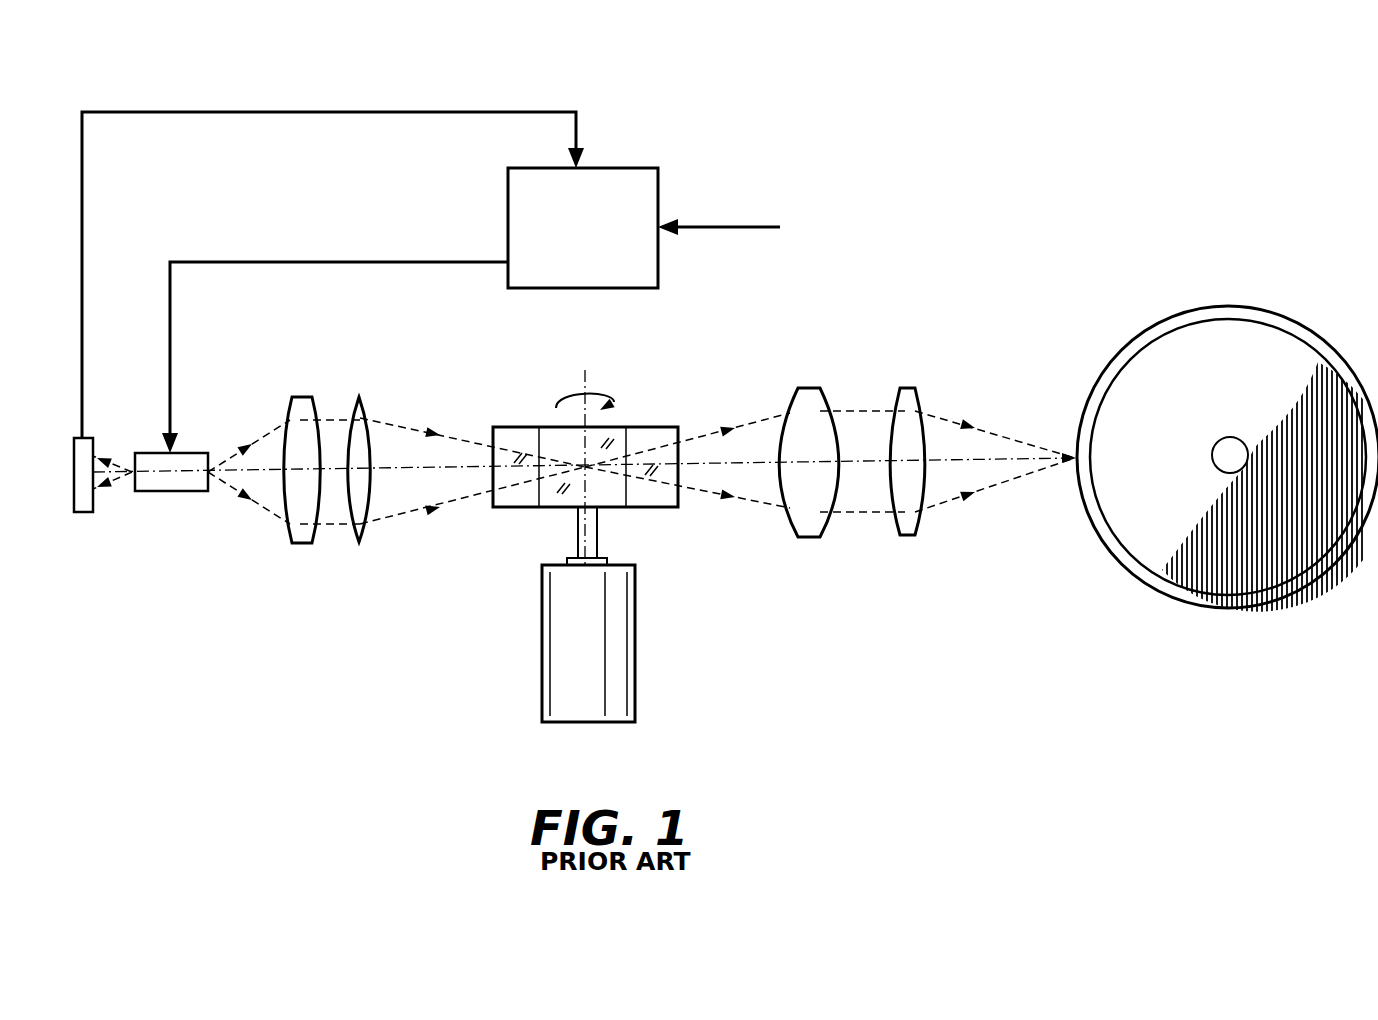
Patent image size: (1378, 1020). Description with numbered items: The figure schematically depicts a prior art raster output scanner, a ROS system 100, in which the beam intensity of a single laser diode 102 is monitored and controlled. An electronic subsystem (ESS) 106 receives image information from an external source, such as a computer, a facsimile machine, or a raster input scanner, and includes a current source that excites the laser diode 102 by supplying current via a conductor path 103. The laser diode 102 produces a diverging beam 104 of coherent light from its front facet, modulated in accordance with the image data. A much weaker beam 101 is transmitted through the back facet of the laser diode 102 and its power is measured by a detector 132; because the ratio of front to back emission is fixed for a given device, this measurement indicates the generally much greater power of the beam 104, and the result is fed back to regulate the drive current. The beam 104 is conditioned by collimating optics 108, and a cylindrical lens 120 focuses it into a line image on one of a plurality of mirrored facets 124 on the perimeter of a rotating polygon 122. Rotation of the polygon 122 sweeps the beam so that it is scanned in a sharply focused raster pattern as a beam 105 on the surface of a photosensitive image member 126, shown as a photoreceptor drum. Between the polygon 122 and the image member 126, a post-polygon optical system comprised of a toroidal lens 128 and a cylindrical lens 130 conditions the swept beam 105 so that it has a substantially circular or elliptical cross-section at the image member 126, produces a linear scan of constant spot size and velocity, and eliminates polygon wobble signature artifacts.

The ROS system 100 is at (869, 128).
The beam 101 is at (120, 465).
The laser diode 102 is at (165, 492).
The conductor path 103 is at (290, 265).
The beam 104 is at (265, 502).
The beam 105 is at (1020, 483).
The electronic subsystem (ESS) 106 is at (632, 166).
The collimating optics 108 is at (303, 396).
The cylindrical lens 120 is at (359, 396).
The rotating polygon 122 is at (613, 430).
The mirrored facets 124 is at (532, 508).
The photosensitive image member 126 is at (1230, 305).
The toroidal lens 128 is at (808, 390).
The cylindrical lens 130 is at (907, 390).
The detector 132 is at (84, 513).